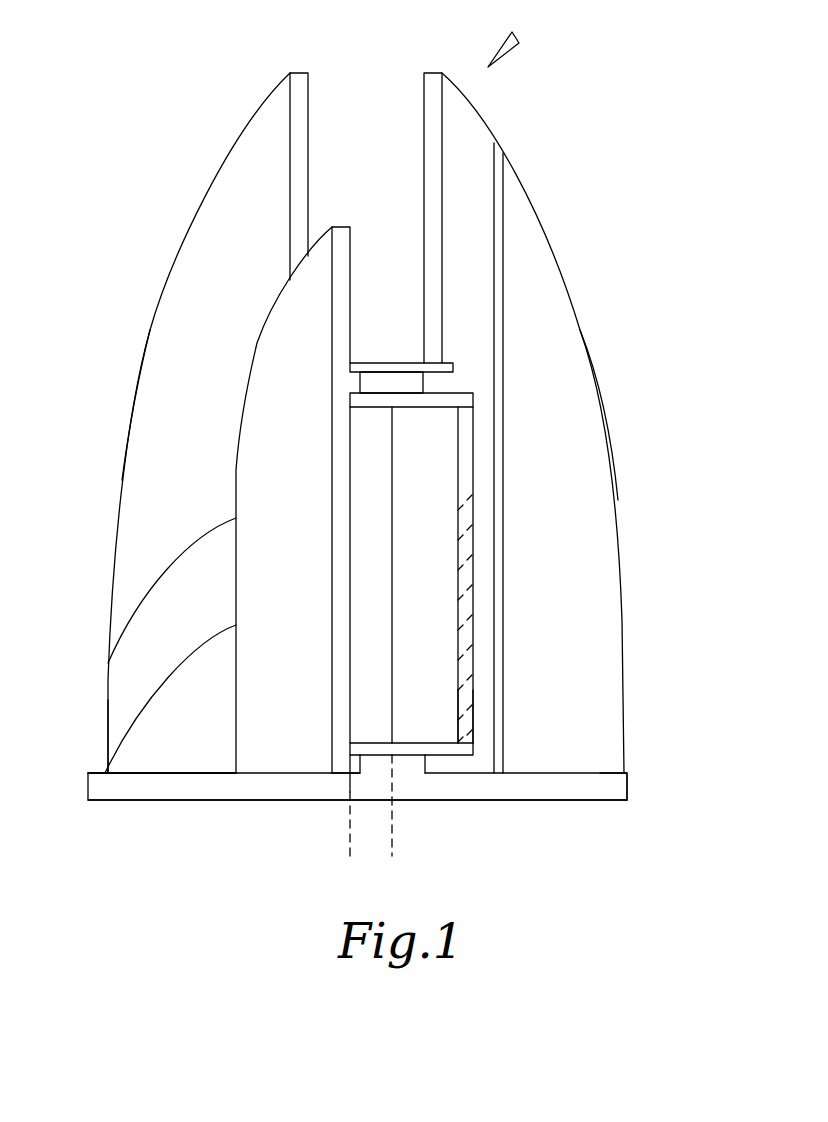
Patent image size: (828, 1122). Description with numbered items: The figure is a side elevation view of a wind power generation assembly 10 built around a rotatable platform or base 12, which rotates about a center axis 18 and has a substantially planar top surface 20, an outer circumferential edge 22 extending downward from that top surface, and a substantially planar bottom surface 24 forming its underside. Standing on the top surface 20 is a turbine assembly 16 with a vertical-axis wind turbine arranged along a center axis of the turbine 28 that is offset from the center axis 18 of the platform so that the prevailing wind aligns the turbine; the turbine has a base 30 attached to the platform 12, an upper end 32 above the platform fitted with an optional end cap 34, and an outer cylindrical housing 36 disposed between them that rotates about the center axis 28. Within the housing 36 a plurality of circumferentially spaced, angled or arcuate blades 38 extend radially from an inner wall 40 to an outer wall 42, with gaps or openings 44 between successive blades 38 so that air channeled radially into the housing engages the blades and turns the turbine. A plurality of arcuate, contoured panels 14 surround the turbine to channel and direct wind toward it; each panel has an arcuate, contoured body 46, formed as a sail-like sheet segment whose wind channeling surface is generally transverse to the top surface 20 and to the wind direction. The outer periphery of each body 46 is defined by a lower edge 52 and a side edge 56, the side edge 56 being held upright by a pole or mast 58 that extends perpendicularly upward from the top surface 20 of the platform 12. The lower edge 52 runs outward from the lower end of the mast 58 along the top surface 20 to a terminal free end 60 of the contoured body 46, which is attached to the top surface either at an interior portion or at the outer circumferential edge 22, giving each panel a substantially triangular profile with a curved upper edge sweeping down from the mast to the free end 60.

The wind power generation assembly 10 is at (519, 37).
The rotatable platform or base 12 is at (620, 787).
The arcuate, contoured panels 14 is at (252, 127).
The turbine assembly 16 is at (420, 727).
The center axis 18 is at (348, 850).
The planar top surface 20 is at (625, 773).
The outer circumferential edge 22 is at (110, 578).
The planar bottom surface 24 is at (588, 803).
The center axis of the turbine 28 is at (392, 850).
The base 30 is at (372, 760).
The upper end 32 is at (387, 398).
The end cap 34 is at (400, 362).
The outer cylindrical housing 36 is at (494, 372).
The blades 38 is at (472, 693).
The inner wall 40 is at (462, 727).
The outer wall 42 is at (473, 590).
The gaps or openings 44 is at (465, 545).
The arcuate, contoured body 46 is at (585, 393).
The lower edge 52 is at (173, 773).
The side edge 56 is at (150, 330).
The pole or mast 58 is at (424, 87).
The terminal free end 60 is at (105, 773).